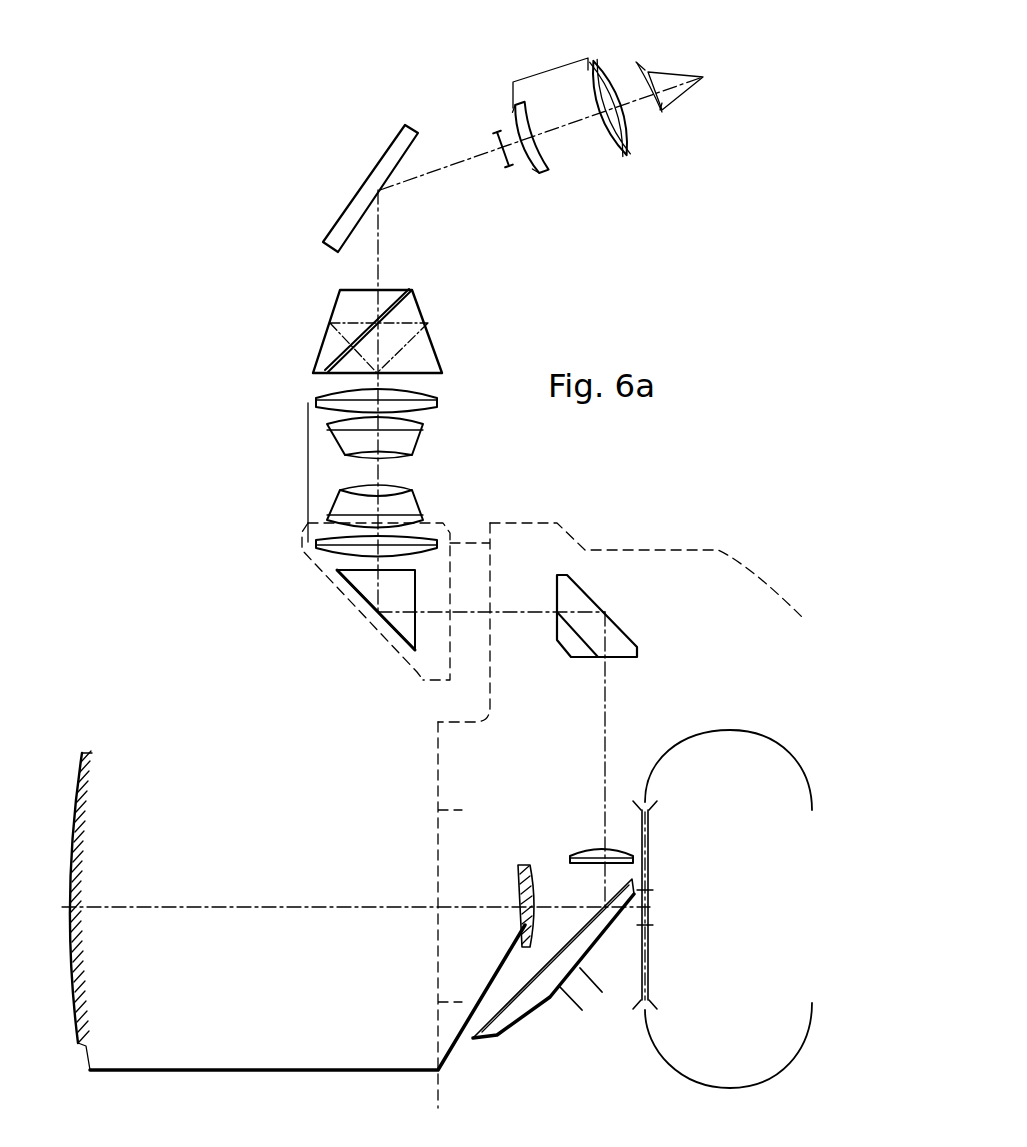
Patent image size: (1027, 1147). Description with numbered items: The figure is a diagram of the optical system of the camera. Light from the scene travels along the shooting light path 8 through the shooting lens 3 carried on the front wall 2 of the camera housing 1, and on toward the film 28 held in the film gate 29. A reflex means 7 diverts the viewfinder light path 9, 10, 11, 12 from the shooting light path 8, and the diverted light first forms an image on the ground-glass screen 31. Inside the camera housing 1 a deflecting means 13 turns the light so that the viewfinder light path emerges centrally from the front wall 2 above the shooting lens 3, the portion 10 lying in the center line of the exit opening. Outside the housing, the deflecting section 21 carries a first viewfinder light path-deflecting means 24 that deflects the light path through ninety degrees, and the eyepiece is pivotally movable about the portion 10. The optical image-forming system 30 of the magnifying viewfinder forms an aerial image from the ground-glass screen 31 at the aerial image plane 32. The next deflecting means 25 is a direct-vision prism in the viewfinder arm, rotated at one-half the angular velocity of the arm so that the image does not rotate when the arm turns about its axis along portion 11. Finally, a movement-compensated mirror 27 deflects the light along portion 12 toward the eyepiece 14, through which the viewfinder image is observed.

The camera housing 1 is at (535, 532).
The front wall 2 is at (438, 755).
The shooting lens 3 is at (345, 1072).
The reflex means 7 is at (493, 1035).
The shooting light path 8 is at (75, 895).
The viewfinder light path portion 9 is at (605, 707).
The viewfinder light path portion 10 is at (450, 612).
The viewfinder light path portion 11 is at (378, 260).
The viewfinder light path portion 12 is at (455, 163).
The deflecting means 13 is at (586, 610).
The eyepiece 14 is at (549, 72).
The deflecting section 21 is at (432, 668).
The first viewfinder light path-deflecting means 24 is at (365, 588).
The viewfinder light path-deflecting means 25 is at (412, 321).
The movement-compensated mirror 27 is at (342, 222).
The film 28 is at (665, 1058).
The film gate 29 is at (652, 907).
The optical image-forming system 30 is at (308, 472).
The ground-glass screen 31 is at (585, 858).
The aerial image plane 32 is at (510, 168).